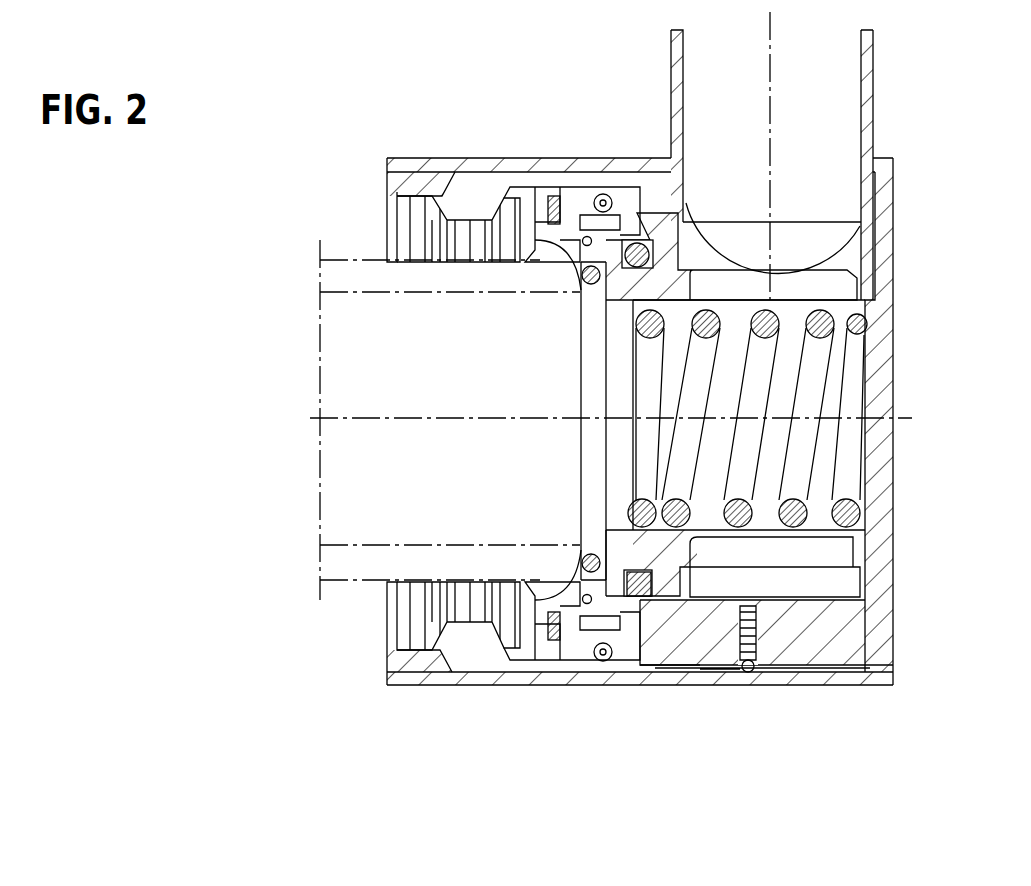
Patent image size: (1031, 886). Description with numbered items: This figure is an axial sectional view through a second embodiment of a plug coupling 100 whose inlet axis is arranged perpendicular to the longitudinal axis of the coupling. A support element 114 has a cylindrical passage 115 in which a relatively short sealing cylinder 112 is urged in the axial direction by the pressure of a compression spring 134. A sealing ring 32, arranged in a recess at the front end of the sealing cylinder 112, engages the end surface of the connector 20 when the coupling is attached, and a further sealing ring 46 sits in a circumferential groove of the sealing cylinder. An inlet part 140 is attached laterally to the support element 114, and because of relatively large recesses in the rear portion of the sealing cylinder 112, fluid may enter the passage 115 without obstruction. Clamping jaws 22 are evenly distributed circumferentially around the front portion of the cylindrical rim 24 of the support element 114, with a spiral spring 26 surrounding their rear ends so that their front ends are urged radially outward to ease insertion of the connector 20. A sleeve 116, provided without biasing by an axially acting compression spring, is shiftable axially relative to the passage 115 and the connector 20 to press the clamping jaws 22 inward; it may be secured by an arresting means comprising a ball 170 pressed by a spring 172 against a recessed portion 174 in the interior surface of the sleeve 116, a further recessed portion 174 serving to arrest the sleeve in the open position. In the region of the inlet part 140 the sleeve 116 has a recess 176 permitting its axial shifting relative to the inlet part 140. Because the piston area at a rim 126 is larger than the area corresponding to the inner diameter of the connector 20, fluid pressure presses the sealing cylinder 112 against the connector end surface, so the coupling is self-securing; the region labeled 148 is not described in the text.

The connector 20 is at (345, 572).
The clamping jaws 22 is at (398, 224).
The front rim 24 is at (518, 655).
The spiral spring 26 is at (603, 660).
The sealing ring 32 is at (582, 275).
The further sealing ring 46 is at (640, 600).
The plug coupling 100 is at (910, 180).
The sealing cylinder 112 is at (657, 160).
The support element 114 is at (885, 600).
The cylindrical passage 115 is at (838, 437).
The sleeve 116 is at (415, 160).
The rim 126 is at (666, 222).
The compression spring 134 is at (862, 516).
The inlet part 140 is at (875, 66).
The piston 148 is at (845, 288).
The ball 170 is at (748, 668).
The spring 172 is at (830, 687).
The recessed portion 174 is at (670, 664).
The recess 176 is at (632, 160).